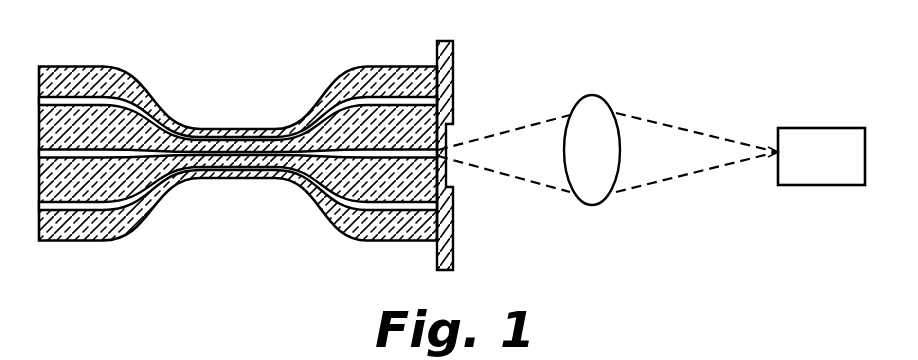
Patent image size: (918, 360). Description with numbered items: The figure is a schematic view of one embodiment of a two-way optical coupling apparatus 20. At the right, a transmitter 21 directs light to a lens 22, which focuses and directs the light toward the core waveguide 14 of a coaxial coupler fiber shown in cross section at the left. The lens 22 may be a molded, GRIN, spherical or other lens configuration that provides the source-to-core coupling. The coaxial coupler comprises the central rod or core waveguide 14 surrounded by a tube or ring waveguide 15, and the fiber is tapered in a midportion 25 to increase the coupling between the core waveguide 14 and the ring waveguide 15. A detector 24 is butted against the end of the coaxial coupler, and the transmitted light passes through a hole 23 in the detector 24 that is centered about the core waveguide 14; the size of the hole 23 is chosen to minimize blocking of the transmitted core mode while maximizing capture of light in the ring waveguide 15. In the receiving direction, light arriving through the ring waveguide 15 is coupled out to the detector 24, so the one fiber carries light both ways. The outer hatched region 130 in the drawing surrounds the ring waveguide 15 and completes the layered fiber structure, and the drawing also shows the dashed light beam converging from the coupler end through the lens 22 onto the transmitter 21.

The cladding 130 is at (354, 86).
The ring waveguide 15 is at (417, 97).
The core waveguide 14 is at (432, 146).
The tapered midportion 25 is at (228, 112).
The detector 24 is at (453, 60).
The hole 23 is at (458, 174).
The lens 22 is at (601, 113).
The transmitter 21 is at (817, 142).
The two-way optical coupling apparatus 20 is at (556, 34).